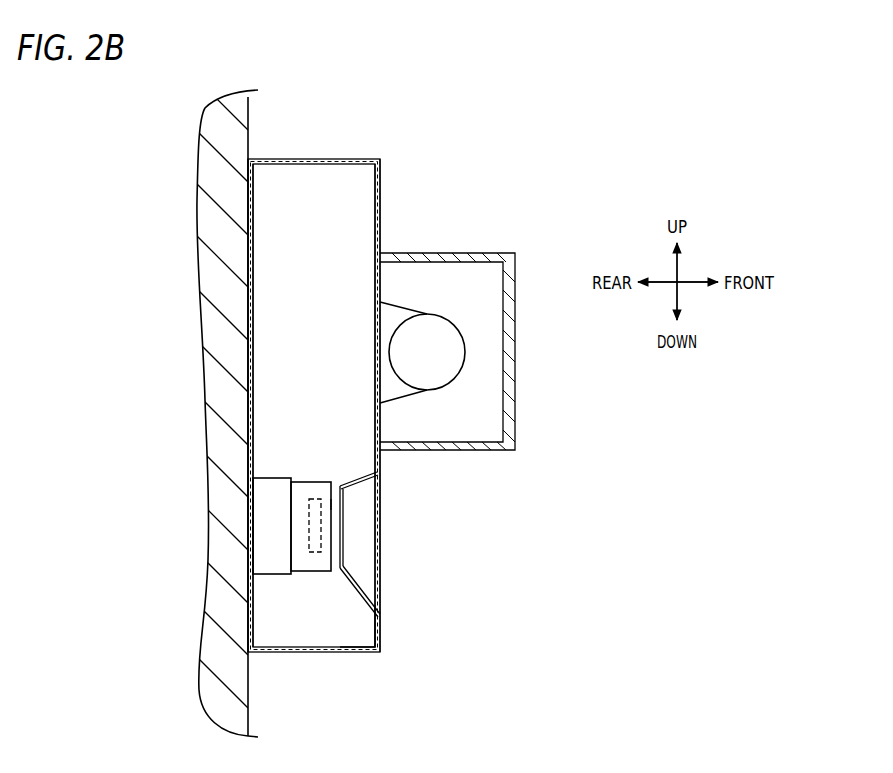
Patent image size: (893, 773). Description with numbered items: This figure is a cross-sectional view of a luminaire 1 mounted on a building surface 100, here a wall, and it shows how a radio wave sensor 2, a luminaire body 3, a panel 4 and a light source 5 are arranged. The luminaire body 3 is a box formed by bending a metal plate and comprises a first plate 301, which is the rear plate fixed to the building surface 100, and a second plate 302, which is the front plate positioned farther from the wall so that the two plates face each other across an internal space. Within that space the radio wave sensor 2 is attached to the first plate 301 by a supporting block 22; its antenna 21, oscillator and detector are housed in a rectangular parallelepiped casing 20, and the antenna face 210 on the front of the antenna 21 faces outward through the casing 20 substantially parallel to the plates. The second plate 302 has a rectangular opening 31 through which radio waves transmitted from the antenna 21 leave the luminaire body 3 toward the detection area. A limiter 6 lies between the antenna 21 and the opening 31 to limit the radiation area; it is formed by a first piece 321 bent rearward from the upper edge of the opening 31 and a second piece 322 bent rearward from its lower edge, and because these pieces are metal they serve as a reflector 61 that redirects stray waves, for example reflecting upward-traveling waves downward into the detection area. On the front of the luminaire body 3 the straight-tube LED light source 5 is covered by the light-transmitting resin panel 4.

The luminaire 1 is at (527, 184).
The radio wave sensor 2 is at (306, 516).
The luminaire body 3 is at (342, 390).
The panel 4 is at (516, 319).
The light source 5 is at (447, 334).
The limiter 6 is at (407, 544).
The casing 20 is at (303, 484).
The antenna 21 is at (316, 553).
The supporting block 22 is at (270, 575).
The opening 31 is at (381, 613).
The reflector 61 is at (407, 544).
The building surface 100 is at (214, 392).
The antenna face 210 is at (332, 505).
The first plate 301 is at (253, 244).
The second plate 302 is at (381, 192).
The first piece 321 is at (361, 482).
The second piece 322 is at (365, 598).